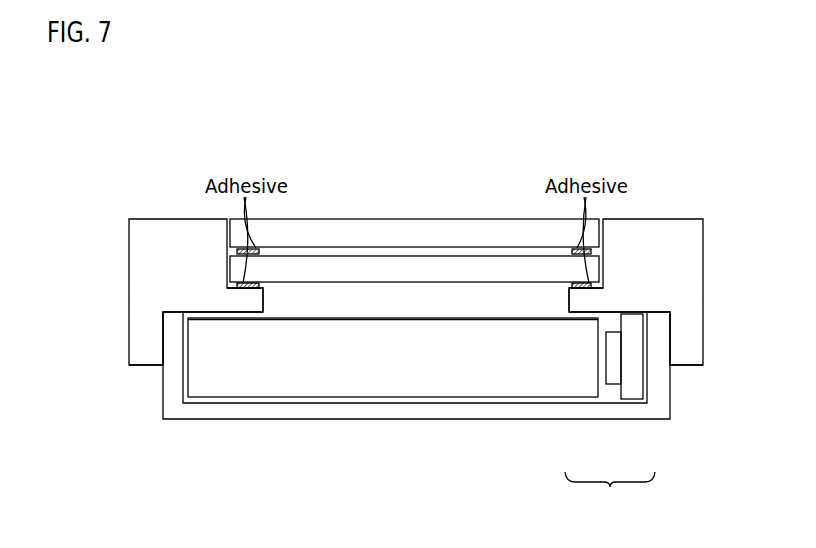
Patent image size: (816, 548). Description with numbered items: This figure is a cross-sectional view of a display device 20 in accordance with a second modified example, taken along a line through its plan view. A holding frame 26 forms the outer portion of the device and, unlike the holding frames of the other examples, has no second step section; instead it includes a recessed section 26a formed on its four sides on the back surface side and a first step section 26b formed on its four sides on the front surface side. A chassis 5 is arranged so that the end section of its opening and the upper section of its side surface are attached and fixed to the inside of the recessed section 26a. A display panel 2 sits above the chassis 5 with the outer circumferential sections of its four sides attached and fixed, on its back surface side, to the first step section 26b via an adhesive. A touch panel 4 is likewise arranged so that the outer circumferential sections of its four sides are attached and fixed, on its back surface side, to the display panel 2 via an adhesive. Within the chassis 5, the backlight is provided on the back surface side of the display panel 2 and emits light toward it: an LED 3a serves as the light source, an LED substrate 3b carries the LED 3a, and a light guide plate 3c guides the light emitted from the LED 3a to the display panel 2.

The display device 20 is at (671, 156).
The display panel 2 is at (413, 270).
The touch panel 4 is at (477, 240).
The chassis 5 is at (477, 419).
The holding frame 26 is at (138, 245).
The recessed section 26a is at (200, 320).
The first step section 26b is at (232, 287).
The LED 3a is at (608, 375).
The LED substrate 3b is at (637, 390).
The light guide plate 3c is at (578, 388).